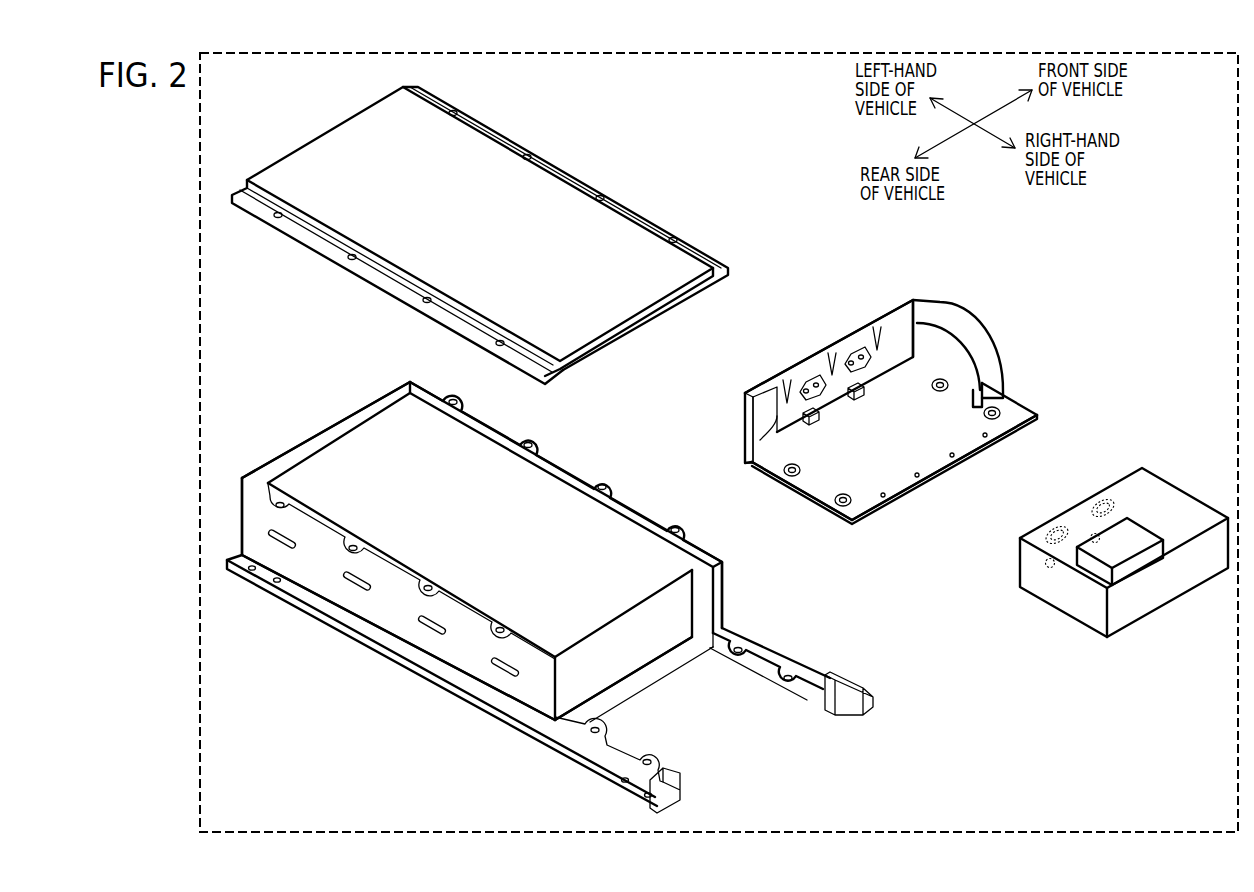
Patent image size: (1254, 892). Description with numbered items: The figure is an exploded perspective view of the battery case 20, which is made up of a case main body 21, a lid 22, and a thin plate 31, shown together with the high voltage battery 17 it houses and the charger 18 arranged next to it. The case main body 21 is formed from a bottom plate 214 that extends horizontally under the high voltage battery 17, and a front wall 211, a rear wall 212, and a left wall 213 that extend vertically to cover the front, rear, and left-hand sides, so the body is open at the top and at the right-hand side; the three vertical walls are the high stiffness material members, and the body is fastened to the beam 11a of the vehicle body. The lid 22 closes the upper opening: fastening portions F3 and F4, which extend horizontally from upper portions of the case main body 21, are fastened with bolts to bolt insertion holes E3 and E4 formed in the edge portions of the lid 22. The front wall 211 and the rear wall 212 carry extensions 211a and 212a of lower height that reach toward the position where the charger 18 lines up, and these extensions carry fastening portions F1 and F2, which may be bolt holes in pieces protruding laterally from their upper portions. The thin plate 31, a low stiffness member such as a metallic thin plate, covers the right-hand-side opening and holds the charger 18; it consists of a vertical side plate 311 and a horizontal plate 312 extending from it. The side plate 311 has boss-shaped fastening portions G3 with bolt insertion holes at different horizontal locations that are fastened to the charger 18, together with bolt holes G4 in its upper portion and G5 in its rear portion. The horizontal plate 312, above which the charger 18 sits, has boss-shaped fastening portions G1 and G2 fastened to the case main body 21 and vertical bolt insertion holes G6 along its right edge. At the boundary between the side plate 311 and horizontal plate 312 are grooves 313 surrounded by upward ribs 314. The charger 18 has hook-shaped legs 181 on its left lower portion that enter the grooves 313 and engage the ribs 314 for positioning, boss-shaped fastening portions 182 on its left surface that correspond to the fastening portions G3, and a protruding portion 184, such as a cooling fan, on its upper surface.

The battery case 20 is at (264, 118).
The lid 22 is at (546, 205).
The bolt insertion holes E3 is at (456, 110).
The bolt insertion holes E4 is at (277, 219).
The case main body 21 is at (353, 406).
The left wall 213 is at (310, 445).
The front wall 211 is at (633, 513).
The fastening portions F3 is at (452, 398).
The high voltage battery 17 is at (543, 515).
The rear wall 212 is at (375, 607).
The fastening portions F4 is at (272, 503).
The bottom plate 214 is at (672, 660).
The extension 212a is at (690, 770).
The fastening portions F2 is at (592, 733).
The extension 211a is at (745, 672).
The fastening portions F1 is at (740, 647).
The beam 11a is at (860, 712).
The thin plate 31 is at (963, 318).
The side plate 311 is at (897, 340).
The horizontal plate 312 is at (857, 470).
The grooves 313 is at (852, 383).
The ribs 314 is at (912, 370).
The fastening portions G1 is at (945, 381).
The fastening portions G2 is at (791, 477).
The fastening portions G3 is at (857, 355).
The bolt holes G4 is at (876, 326).
The bolt holes G5 is at (752, 418).
The bolt insertion holes G6 is at (886, 499).
The charger 18 is at (1185, 505).
The protruding portion 184 is at (1135, 568).
The legs 181 is at (1046, 561).
The fastening portions 182 is at (1055, 530).